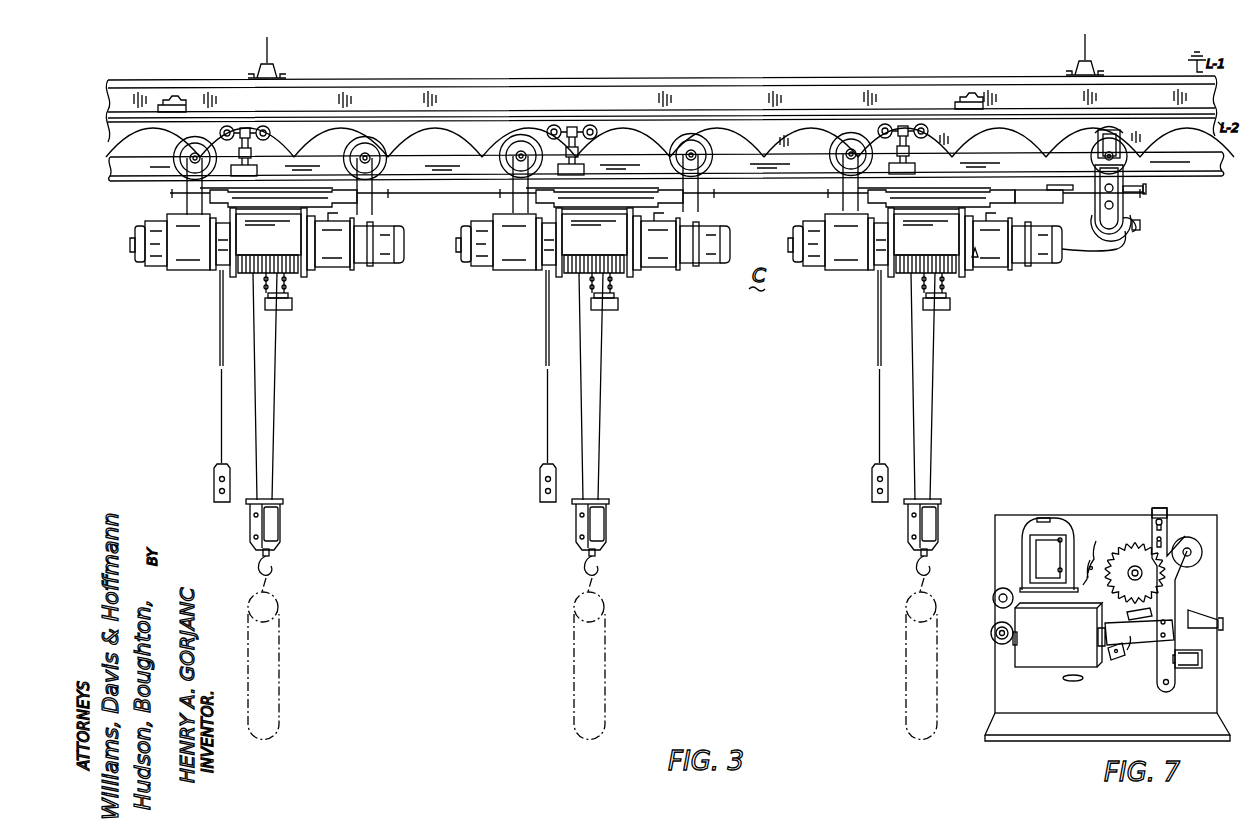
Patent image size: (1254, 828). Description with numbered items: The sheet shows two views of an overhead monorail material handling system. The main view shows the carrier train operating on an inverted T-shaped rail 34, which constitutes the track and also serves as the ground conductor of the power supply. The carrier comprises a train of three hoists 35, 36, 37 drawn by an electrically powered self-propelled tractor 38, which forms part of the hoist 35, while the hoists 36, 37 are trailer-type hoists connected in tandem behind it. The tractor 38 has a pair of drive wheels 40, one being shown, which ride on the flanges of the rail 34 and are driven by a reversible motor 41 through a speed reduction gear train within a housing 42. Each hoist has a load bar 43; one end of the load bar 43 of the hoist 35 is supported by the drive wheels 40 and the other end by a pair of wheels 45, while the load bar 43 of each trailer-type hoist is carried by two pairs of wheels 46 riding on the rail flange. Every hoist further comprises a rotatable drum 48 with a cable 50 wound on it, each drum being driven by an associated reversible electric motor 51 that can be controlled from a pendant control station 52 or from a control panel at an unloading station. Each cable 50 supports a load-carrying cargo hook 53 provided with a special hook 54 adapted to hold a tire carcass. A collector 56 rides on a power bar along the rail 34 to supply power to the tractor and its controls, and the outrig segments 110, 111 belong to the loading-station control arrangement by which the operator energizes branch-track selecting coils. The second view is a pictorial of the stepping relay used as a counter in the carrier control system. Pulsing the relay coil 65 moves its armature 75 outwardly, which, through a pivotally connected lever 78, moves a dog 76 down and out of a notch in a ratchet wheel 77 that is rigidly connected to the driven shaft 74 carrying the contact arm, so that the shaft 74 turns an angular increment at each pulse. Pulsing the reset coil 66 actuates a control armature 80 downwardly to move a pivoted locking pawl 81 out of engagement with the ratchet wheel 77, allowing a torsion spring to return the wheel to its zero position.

In FIG. 3, the inverted T-shaped rail 34 is at (695, 95).
In FIG. 3, the hoist 35 is at (976, 267).
In FIG. 3, the trailer-type hoist 36 is at (653, 272).
In FIG. 3, the trailer-type hoist 37 is at (329, 269).
In FIG. 3, the electrically powered self-propelled tractor 38 is at (1115, 227).
In FIG. 3, the drive wheels 40 is at (1125, 159).
In FIG. 3, the reversible motor 41 is at (1120, 246).
In FIG. 3, the housing 42 is at (1117, 196).
In FIG. 3, the load bar 43 is at (275, 198).
In FIG. 3, the pair of wheels 45 is at (837, 146).
In FIG. 3, the pairs of wheels 46 is at (198, 145).
In FIG. 3, the rotatable drum 48 is at (288, 280).
In FIG. 3, the cable 50 is at (279, 399).
In FIG. 3, the reversible electric motor 51 is at (198, 276).
In FIG. 3, the pendant control station 52 is at (216, 482).
In FIG. 3, the load-carrying cargo hook 53 is at (276, 568).
In FIG. 3, the special hook 54 is at (280, 615).
In FIG. 3, the collector 56 is at (273, 127).
In FIG. 3, the outrig segment 110 is at (1148, 235).
In FIG. 7, the outrig segment 110 is at (1170, 512).
In FIG. 3, the outrig segment 111 is at (993, 264).
In FIG. 7, the relay coil 65 is at (1038, 668).
In FIG. 7, the reset coil 66 is at (1045, 553).
In FIG. 7, the driven shaft 74 is at (1133, 567).
In FIG. 7, the armature 75 is at (1126, 656).
In FIG. 7, the dog 76 is at (1153, 639).
In FIG. 7, the ratchet wheel 77 is at (1128, 612).
In FIG. 7, the pivotally connected lever 78 is at (1170, 578).
In FIG. 7, the control armature 80 is at (1037, 581).
In FIG. 7, the pivoted locking pawl 81 is at (1095, 551).